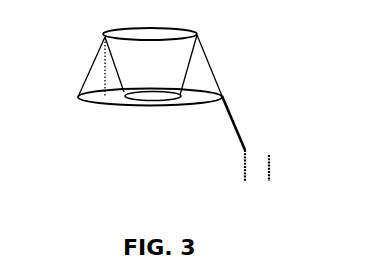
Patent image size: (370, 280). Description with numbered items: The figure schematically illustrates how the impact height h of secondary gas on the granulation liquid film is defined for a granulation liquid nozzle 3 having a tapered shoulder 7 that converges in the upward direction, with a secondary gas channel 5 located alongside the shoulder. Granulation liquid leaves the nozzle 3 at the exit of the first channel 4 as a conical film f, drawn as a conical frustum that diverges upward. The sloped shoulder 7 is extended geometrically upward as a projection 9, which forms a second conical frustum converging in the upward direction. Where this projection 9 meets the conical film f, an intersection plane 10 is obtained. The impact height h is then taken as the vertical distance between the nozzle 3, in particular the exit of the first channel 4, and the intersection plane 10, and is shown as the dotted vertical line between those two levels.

The intersection plane 10 is at (203, 32).
The projection of the shoulder 9 is at (209, 60).
The impact height h is at (100, 73).
The conical film f is at (185, 68).
The nozzle 3 is at (197, 108).
The first channel 4 is at (145, 105).
The tapered shoulder 7 is at (242, 144).
The secondary gas channel 5 is at (243, 178).